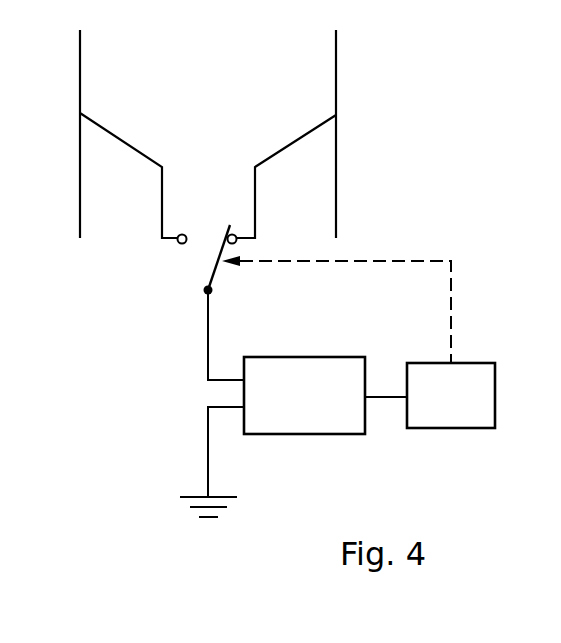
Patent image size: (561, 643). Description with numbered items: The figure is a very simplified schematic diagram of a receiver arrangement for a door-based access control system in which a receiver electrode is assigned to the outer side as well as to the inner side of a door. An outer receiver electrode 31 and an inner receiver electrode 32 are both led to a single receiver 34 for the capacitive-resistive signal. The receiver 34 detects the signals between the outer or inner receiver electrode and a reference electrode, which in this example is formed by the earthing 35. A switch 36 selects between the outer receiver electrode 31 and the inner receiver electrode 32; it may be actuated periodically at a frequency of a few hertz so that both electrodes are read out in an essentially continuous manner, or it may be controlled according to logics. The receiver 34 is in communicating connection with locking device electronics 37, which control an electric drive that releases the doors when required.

The outer receiver electrode 31 is at (80, 82).
The inner receiver electrode 32 is at (336, 84).
The receiver 34 is at (313, 418).
The earthing 35 is at (190, 496).
The switch 36 is at (214, 275).
The locking device electronics 37 is at (452, 415).